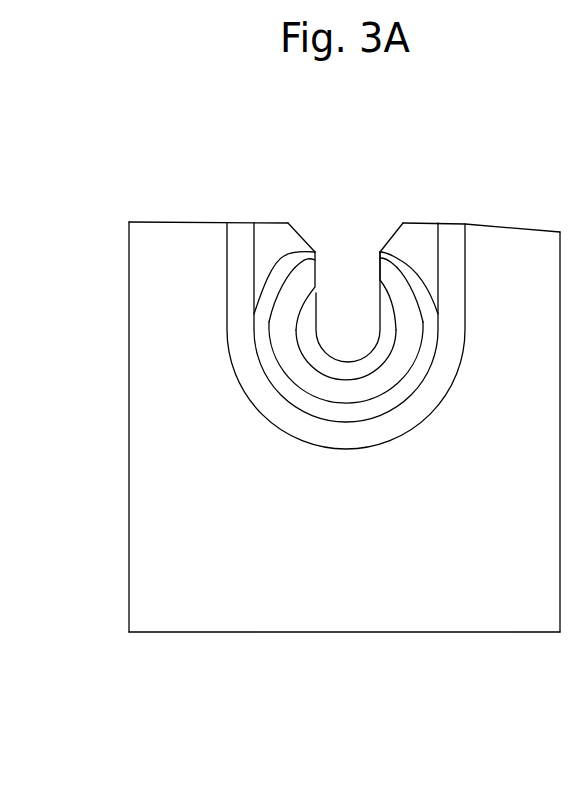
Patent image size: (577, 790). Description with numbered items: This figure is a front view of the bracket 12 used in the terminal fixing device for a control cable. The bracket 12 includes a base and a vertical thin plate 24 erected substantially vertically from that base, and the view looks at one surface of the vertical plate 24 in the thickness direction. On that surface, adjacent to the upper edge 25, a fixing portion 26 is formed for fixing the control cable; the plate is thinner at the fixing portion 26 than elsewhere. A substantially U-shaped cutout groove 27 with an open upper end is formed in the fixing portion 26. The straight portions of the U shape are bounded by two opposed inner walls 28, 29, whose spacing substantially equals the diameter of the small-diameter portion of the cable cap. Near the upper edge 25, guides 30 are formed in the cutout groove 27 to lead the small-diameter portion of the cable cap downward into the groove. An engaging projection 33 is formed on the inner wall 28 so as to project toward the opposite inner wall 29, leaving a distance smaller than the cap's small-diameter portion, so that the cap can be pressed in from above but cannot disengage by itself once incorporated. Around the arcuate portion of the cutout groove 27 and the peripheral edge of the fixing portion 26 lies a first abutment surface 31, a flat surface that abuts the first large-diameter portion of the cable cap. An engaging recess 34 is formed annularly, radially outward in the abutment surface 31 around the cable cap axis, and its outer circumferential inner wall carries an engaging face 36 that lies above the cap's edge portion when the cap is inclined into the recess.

The bracket 12 is at (412, 634).
The vertical thin plate 24 is at (278, 633).
The upper edge 25 is at (148, 222).
The fixing portion 26 is at (269, 421).
The cutout groove 27 is at (379, 252).
The inner wall 28 is at (320, 298).
The inner wall 29 is at (374, 256).
The guides 30 is at (398, 265).
The first abutment surface 31 is at (303, 340).
The engaging projection 33 is at (343, 250).
The engaging recess 34 is at (400, 278).
The engaging face 36 is at (285, 248).